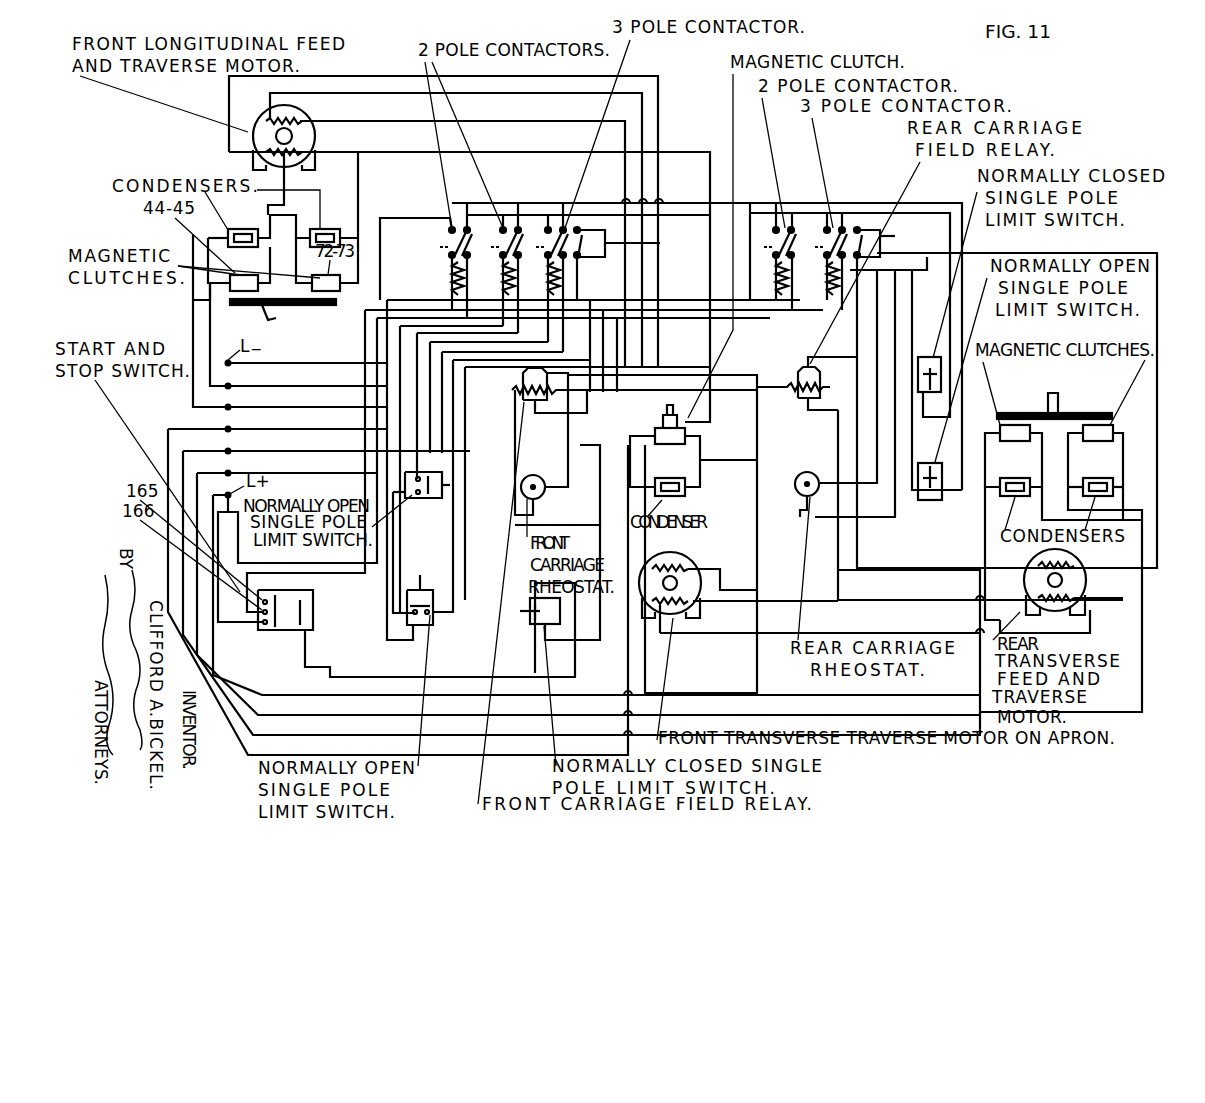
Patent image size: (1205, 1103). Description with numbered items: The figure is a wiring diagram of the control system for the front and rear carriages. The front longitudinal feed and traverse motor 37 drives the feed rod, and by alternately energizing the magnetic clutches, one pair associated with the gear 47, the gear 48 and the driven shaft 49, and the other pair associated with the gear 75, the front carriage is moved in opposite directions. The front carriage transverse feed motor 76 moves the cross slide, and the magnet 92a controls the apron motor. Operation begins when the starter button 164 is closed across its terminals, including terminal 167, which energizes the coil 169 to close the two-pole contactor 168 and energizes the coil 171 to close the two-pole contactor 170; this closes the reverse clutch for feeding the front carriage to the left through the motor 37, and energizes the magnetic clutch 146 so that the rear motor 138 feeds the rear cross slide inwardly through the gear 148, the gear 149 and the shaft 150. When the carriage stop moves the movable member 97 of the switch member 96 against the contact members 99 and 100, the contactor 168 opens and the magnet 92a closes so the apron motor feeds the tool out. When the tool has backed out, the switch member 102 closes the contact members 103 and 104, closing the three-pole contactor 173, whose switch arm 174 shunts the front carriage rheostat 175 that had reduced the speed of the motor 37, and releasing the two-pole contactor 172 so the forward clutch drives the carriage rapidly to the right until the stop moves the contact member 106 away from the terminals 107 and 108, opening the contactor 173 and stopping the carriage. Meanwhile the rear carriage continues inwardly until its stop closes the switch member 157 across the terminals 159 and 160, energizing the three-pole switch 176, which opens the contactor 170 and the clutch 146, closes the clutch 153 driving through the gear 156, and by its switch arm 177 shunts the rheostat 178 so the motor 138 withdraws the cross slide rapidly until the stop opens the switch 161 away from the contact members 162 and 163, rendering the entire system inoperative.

The motor 37 is at (332, 107).
The gear 47 is at (231, 321).
The gear 48 is at (302, 326).
The driven shaft 49 is at (269, 324).
The gear 75 is at (339, 325).
The motor 76 is at (669, 542).
The magnet 92a is at (666, 465).
The switch member 96 is at (439, 449).
The movable member 97 is at (439, 522).
The contact member 99 is at (398, 478).
The contact member 100 is at (414, 513).
The switch member 102 is at (439, 573).
The contact member 103 is at (396, 627).
The contact member 104 is at (450, 627).
The contact member 106 is at (587, 617).
The terminal 107 is at (521, 591).
The terminal 108 is at (521, 634).
The motor 138 is at (1103, 608).
The magnetic clutch 146 is at (1023, 457).
The gear 148 is at (1019, 394).
The gear 149 is at (1048, 387).
The shaft 150 is at (1075, 385).
The magnetic clutch 153 is at (1108, 456).
The gear 156 is at (1110, 387).
The switch member 157 is at (949, 449).
The terminal 159 is at (916, 516).
The terminal 160 is at (953, 520).
The switch 161 is at (931, 336).
The contact member 162 is at (882, 381).
The contact member 163 is at (967, 394).
The starter button 164 is at (292, 649).
The terminal 167 is at (256, 643).
The switch 168 is at (419, 232).
The coil 169 is at (420, 277).
The switch 170 is at (804, 199).
The coil 171 is at (805, 290).
The two-pole contactor 172 is at (528, 203).
The three-pole contactor 173 is at (564, 203).
The switch arm 174 is at (684, 242).
The front carriage rheostat 175 is at (540, 458).
The three-pole switch 176 is at (864, 200).
The switch arm 177 is at (914, 235).
The rheostat 178 is at (812, 456).